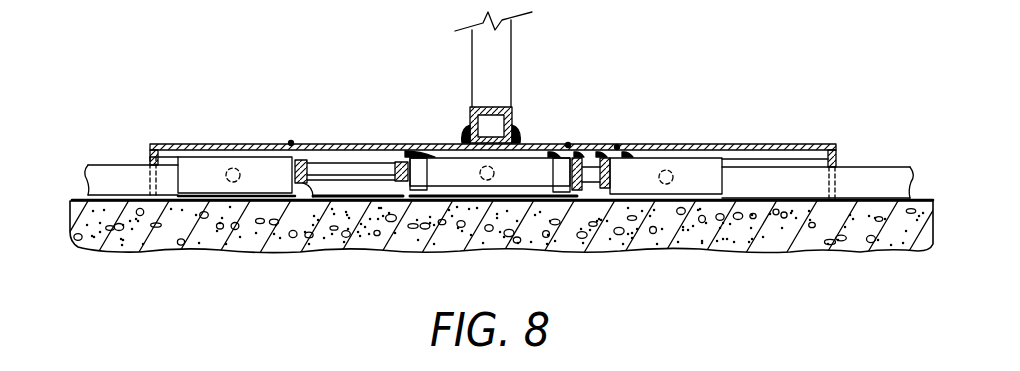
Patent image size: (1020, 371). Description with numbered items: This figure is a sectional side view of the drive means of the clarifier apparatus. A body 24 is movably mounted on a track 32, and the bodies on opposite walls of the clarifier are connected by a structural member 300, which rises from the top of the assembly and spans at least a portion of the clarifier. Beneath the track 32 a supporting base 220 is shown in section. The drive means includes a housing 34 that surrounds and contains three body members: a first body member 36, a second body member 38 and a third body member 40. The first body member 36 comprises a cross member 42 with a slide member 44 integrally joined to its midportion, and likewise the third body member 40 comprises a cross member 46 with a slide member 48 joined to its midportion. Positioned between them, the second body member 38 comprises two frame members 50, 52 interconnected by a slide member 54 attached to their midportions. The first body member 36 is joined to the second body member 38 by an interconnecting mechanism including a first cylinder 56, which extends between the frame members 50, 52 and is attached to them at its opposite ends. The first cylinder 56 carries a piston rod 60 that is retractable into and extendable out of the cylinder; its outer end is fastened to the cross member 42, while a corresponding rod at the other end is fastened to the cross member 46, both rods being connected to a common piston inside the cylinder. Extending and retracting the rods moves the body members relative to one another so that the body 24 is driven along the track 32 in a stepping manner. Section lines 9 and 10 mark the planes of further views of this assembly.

The section line 9- 9 is at (145, 149).
The section line 10- 10 is at (667, 102).
The body 24 is at (373, 142).
The track 32 is at (138, 168).
The housing 34 is at (802, 145).
The first body member 36 is at (292, 140).
The second body member 38 is at (568, 143).
The third body member 40 is at (617, 145).
The cross member 42 is at (310, 190).
The slide member 44 is at (212, 170).
The cross member 46 is at (610, 172).
The slide member 48 is at (690, 183).
The frame member 50 is at (402, 204).
The frame member 52 is at (575, 188).
The slide member 54 is at (447, 195).
The first cylinder 56 is at (513, 182).
The piston rod 60 is at (340, 170).
The concrete foundation 220 is at (843, 238).
The structural member 300 is at (463, 46).